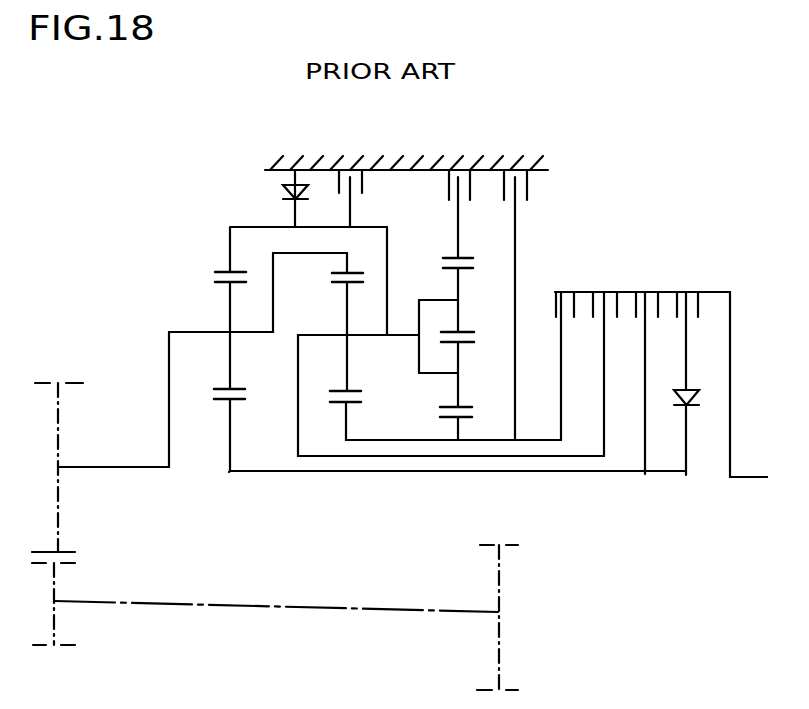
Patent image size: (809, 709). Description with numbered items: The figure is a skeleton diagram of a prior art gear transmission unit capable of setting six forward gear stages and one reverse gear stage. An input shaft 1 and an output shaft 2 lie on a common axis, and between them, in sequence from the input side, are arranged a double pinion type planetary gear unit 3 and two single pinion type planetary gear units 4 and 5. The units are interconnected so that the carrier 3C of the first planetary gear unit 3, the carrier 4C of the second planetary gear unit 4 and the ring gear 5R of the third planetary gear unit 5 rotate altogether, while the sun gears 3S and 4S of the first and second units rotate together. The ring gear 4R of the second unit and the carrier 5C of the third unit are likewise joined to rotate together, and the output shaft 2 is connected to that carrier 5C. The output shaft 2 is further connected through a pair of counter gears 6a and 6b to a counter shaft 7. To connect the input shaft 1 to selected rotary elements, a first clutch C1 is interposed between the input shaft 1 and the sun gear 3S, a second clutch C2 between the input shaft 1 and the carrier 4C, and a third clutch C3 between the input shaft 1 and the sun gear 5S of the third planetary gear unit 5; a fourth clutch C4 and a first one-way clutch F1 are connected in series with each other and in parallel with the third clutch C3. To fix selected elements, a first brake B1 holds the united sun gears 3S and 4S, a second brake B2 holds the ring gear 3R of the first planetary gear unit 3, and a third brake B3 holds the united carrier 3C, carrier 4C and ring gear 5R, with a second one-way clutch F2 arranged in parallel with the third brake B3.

The input shaft 1 is at (742, 480).
The output shaft 2 is at (97, 470).
The double pinion type planetary gear unit 3 is at (443, 440).
The single pinion type planetary gear unit 4 is at (323, 428).
The single pinion type planetary gear unit 5 is at (212, 439).
The counter gear 6a is at (58, 438).
The counter gear 6b is at (56, 570).
The counter shaft 7 is at (295, 610).
The ring gear of the first planetary gear unit 3R is at (452, 259).
The carrier of the first planetary gear unit 3C is at (434, 373).
The sun gear of the first planetary gear unit 3S is at (462, 415).
The ring gear of the second planetary gear unit 4R is at (335, 274).
The carrier of the second planetary gear unit 4C is at (317, 335).
The sun gear of the second planetary gear unit 4S is at (352, 404).
The ring gear of the third planetary gear unit 5R is at (214, 270).
The carrier of the third planetary gear unit 5C is at (203, 331).
The sun gear of the third planetary gear unit 5S is at (236, 402).
The first brake B1 is at (530, 187).
The second brake B2 is at (450, 186).
The third brake B3 is at (352, 170).
The first clutch C1 is at (564, 292).
The second clutch C2 is at (604, 292).
The third clutch C3 is at (649, 292).
The fourth clutch C4 is at (695, 292).
The first one-way clutch F1 is at (697, 373).
The second one-way clutch F2 is at (283, 192).